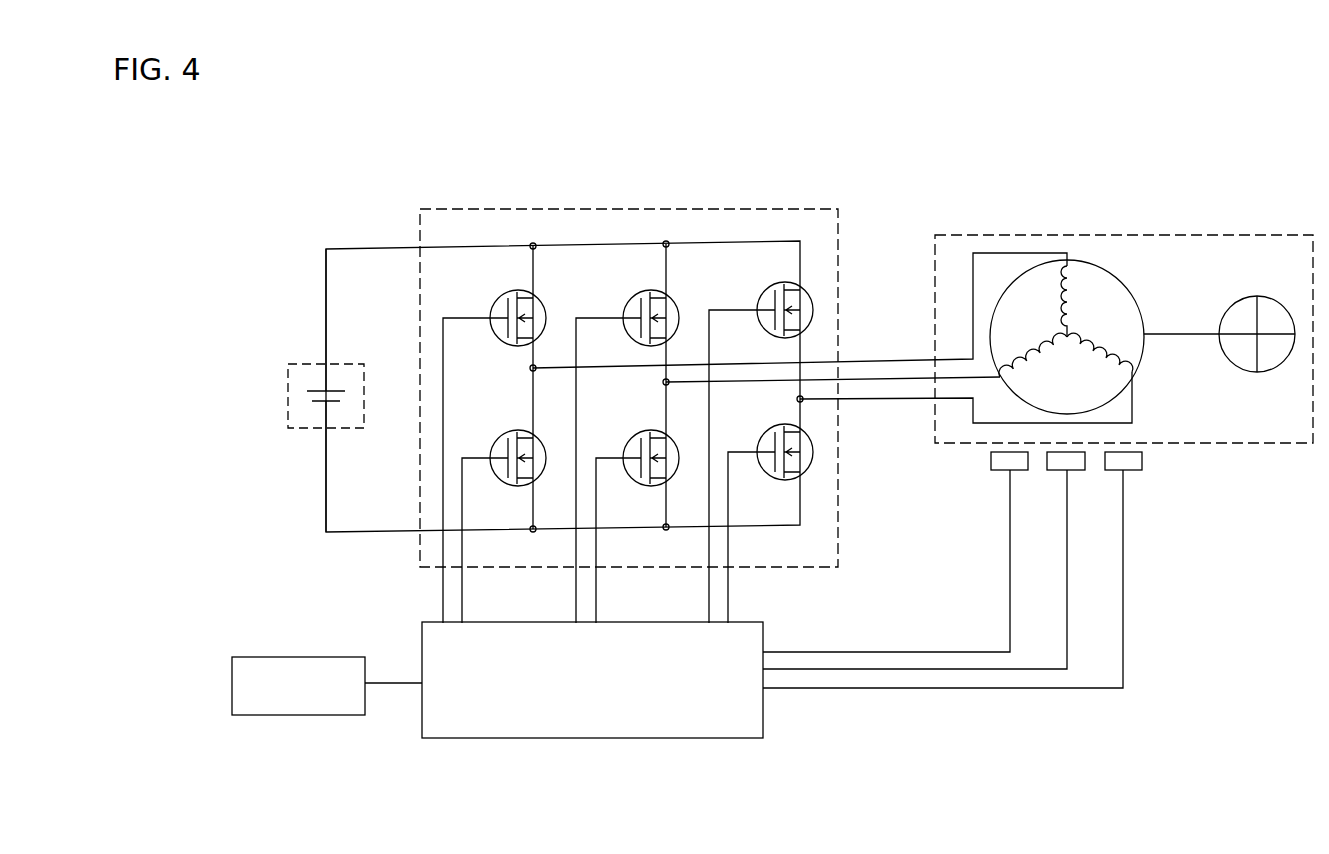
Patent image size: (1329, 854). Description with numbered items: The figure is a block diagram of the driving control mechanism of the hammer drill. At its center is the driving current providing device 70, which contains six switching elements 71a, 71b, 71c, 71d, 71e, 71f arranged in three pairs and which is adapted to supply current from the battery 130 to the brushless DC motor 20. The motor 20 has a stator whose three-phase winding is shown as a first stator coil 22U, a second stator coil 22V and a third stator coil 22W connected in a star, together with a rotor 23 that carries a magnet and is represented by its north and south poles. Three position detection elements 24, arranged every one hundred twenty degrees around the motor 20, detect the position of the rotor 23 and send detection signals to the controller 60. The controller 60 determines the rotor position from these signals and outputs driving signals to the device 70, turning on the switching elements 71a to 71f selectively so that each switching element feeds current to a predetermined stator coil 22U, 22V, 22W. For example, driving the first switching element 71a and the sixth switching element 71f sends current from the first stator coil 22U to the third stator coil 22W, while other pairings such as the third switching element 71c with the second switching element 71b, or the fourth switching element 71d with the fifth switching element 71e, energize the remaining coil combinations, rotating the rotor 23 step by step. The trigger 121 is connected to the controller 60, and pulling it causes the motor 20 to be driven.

The driving current providing device 70 is at (635, 208).
The first switching element 71a is at (494, 443).
The second switching element 71b is at (504, 513).
The third switching element 71c is at (627, 443).
The fourth switching element 71d is at (637, 513).
The fifth switching element 71e is at (761, 440).
The sixth switching element 71f is at (770, 510).
The motor 20 is at (1125, 233).
The first stator coil 22U is at (1090, 301).
The second stator coil 22V is at (1033, 353).
The third stator coil 22W is at (1100, 362).
The rotor 23 is at (1238, 298).
The position detection elements 24 is at (1027, 470).
The controller 60 is at (595, 738).
The trigger 121 is at (300, 715).
The battery 130 is at (287, 393).